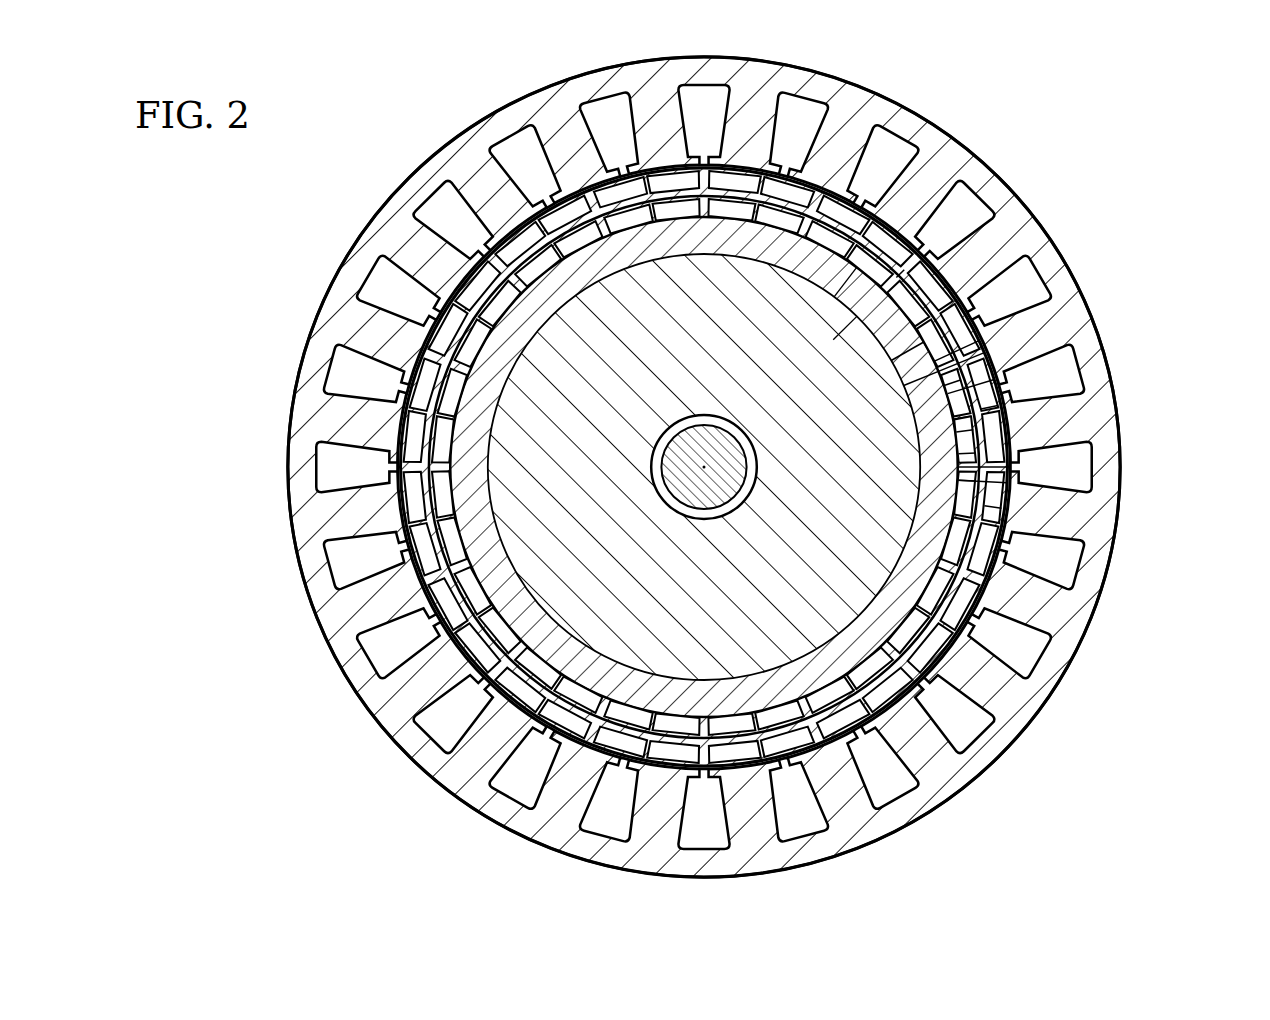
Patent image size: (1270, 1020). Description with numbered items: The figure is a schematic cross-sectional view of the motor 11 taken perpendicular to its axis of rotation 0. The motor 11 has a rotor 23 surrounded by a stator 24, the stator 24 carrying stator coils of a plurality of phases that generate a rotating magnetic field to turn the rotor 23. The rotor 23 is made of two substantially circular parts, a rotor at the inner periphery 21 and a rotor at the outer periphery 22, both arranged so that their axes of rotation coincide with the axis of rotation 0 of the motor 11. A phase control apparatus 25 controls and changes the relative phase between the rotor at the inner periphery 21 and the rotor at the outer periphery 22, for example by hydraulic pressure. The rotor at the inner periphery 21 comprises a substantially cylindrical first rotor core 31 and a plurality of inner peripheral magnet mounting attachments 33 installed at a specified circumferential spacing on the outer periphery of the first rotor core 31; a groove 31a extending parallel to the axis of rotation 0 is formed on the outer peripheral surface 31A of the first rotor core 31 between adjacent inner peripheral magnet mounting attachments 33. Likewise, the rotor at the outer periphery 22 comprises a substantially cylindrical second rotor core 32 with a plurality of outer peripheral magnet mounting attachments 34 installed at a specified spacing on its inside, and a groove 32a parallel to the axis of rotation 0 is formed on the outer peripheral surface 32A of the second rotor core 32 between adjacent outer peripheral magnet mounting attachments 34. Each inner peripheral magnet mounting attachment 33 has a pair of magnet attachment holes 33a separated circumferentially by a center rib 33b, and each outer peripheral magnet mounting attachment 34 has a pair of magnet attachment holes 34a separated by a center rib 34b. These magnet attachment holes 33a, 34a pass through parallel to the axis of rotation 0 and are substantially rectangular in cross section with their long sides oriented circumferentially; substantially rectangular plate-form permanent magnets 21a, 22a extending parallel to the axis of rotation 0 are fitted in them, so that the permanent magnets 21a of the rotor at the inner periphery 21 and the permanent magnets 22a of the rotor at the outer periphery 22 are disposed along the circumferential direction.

The axis of rotation 0 is at (700, 462).
The motor 11 is at (1157, 156).
The rotor at the inner periphery 21 is at (905, 236).
The permanent magnet 21a is at (965, 392).
The rotor at the outer periphery 22 is at (862, 197).
The permanent magnet 22a is at (990, 405).
The rotor 23 is at (1078, 154).
The stator 24 is at (922, 112).
The phase control apparatus 25 is at (697, 292).
The first rotor core 31 is at (868, 304).
The outer peripheral surface 31A is at (982, 322).
The groove 31a is at (985, 368).
The second rotor core 32 is at (845, 283).
The outer peripheral surface 32A is at (992, 345).
The groove 32a is at (985, 386).
The inner peripheral magnet mounting attachment 33 is at (948, 280).
The magnet attachment hole 33a is at (960, 380).
The center rib 33b is at (960, 407).
The outer peripheral magnet mounting attachment 34 is at (970, 298).
The magnet attachment hole 34a is at (968, 435).
The center rib 34b is at (966, 458).